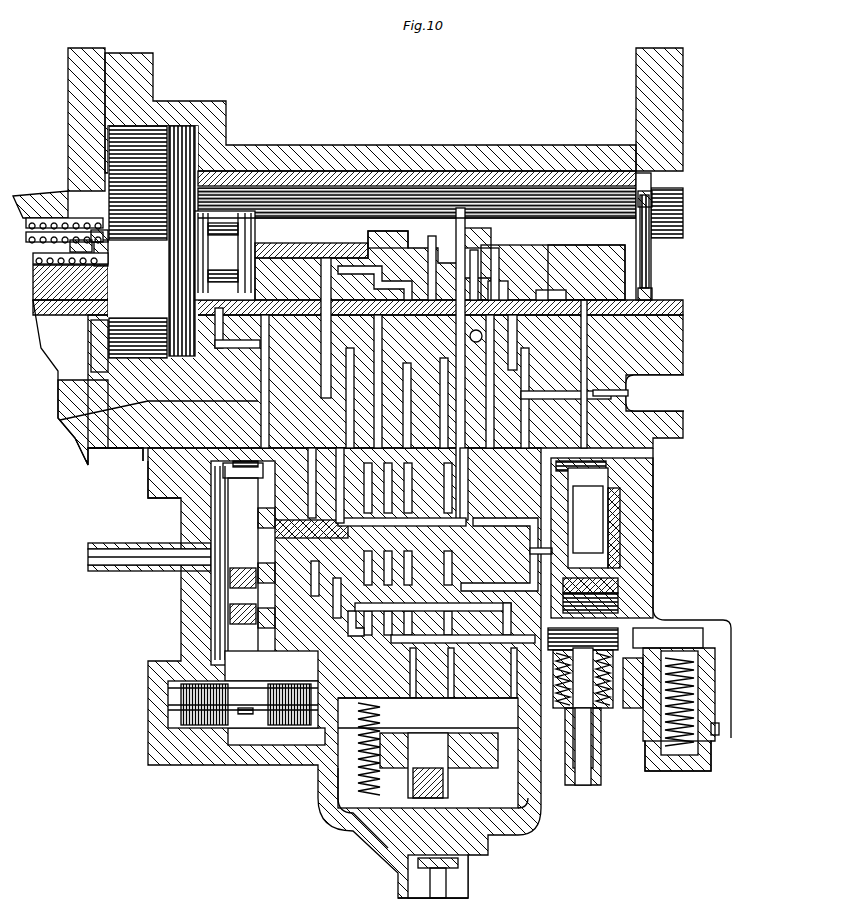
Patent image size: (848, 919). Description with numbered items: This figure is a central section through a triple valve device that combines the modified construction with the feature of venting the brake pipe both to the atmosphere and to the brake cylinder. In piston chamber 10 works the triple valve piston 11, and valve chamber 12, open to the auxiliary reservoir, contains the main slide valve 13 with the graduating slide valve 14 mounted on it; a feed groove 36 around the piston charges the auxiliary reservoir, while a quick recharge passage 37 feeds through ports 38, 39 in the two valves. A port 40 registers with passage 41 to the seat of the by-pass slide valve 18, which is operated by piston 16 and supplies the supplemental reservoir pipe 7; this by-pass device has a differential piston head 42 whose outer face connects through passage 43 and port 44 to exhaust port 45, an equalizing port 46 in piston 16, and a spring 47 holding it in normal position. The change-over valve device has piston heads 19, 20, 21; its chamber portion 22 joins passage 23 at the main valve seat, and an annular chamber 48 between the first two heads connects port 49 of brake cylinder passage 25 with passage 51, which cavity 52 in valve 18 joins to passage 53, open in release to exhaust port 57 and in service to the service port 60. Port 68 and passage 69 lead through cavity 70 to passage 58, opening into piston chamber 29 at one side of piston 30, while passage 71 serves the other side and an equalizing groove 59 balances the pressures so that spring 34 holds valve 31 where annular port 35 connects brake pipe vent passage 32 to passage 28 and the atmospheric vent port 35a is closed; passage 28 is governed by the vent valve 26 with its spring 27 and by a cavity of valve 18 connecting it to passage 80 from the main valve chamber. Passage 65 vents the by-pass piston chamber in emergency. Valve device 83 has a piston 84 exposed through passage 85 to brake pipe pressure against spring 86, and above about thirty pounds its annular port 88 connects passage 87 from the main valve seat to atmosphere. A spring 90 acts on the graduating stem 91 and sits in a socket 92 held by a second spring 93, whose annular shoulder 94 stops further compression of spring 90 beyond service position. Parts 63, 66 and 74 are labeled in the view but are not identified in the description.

The supplemental reservoir pipe 7 is at (135, 553).
The piston chamber 10 is at (348, 473).
The triple valve piston 11 is at (160, 292).
The valve chamber 12 is at (660, 290).
The main slide valve 13 is at (575, 245).
The graduating slide valve 14 is at (495, 230).
The piston 16 is at (255, 693).
The slide valve 18 is at (257, 538).
The piston head 19 is at (625, 465).
The piston head 20 is at (621, 554).
The piston head 21 is at (630, 568).
The portion of piston chamber 22 is at (580, 448).
The passage 23 is at (386, 381).
The brake cylinder passage 25 is at (620, 532).
The vent valve 26 is at (583, 666).
The spring 27 is at (579, 716).
The passage 28 is at (525, 797).
The piston chamber 29 is at (452, 725).
The piston 30 is at (440, 760).
The valve 31 is at (460, 860).
The brake pipe vent passage 32 is at (115, 455).
The spring 34 is at (480, 224).
The annular port 35 is at (460, 842).
The atmospheric vent port 35a is at (433, 908).
The feed groove 36 is at (425, 226).
The quick recharge passage 37 is at (312, 326).
The port 38 is at (310, 260).
The port 39 is at (362, 226).
The port 40 is at (262, 262).
The passage 41 is at (185, 508).
The differential piston head 42 is at (225, 422).
The passage 43 is at (505, 370).
The port 44 is at (553, 272).
The exhaust port 45 is at (345, 317).
The equalizing port 46 is at (560, 278).
The spring 47 is at (535, 380).
The annular chamber 48 is at (615, 497).
The port 49 is at (615, 482).
The passage 51 is at (499, 554).
The cavity 52 is at (357, 808).
The passage 53 is at (260, 518).
The exhaust port 57 is at (372, 330).
The passage 58 is at (505, 660).
The equalizing groove 59 is at (510, 822).
The service port 60 is at (482, 256).
The control rod 63 is at (446, 310).
The passage 65 is at (355, 380).
The passage 66 is at (452, 230).
The port 68 is at (528, 543).
The passage 69 is at (445, 608).
The cavity 70 is at (260, 568).
The passage 71 is at (520, 325).
The piston ring 74 is at (262, 604).
The passage 80 is at (316, 548).
The valve device 83 is at (710, 694).
The piston 84 is at (707, 660).
The passage 85 is at (640, 625).
The spring 86 is at (708, 748).
The passage 87 is at (468, 334).
The annular port 88 is at (712, 720).
The spring 90 is at (72, 280).
The graduating stem 91 is at (106, 250).
The socket 92 is at (55, 222).
The second spring 93 is at (45, 208).
The annular shoulder 94 is at (60, 262).